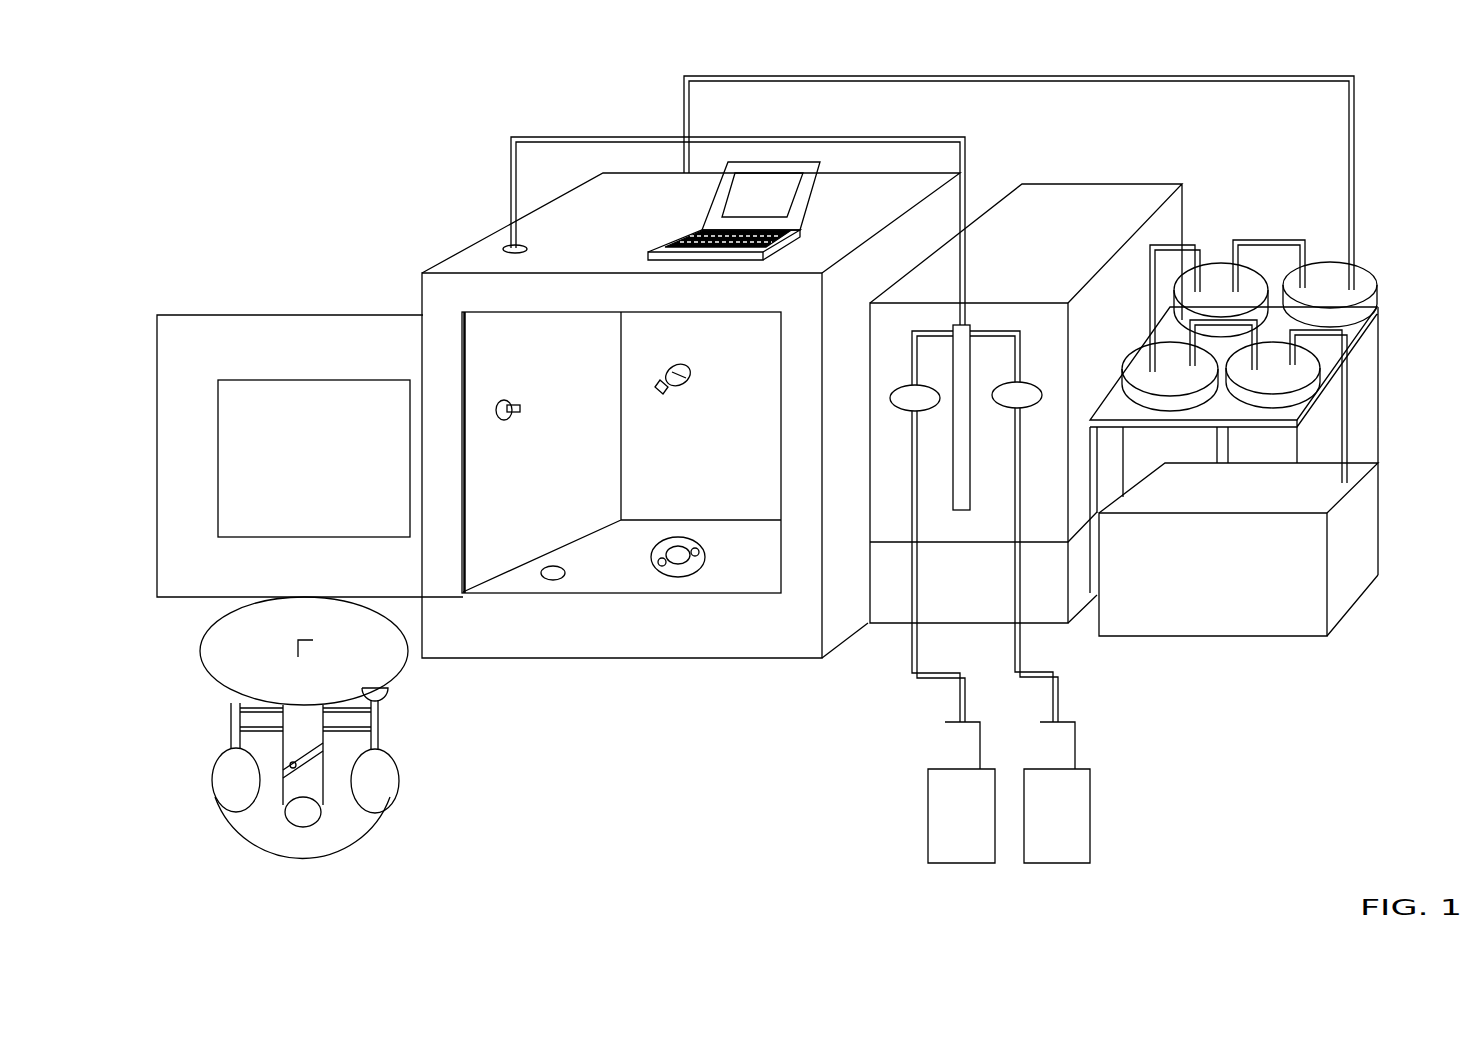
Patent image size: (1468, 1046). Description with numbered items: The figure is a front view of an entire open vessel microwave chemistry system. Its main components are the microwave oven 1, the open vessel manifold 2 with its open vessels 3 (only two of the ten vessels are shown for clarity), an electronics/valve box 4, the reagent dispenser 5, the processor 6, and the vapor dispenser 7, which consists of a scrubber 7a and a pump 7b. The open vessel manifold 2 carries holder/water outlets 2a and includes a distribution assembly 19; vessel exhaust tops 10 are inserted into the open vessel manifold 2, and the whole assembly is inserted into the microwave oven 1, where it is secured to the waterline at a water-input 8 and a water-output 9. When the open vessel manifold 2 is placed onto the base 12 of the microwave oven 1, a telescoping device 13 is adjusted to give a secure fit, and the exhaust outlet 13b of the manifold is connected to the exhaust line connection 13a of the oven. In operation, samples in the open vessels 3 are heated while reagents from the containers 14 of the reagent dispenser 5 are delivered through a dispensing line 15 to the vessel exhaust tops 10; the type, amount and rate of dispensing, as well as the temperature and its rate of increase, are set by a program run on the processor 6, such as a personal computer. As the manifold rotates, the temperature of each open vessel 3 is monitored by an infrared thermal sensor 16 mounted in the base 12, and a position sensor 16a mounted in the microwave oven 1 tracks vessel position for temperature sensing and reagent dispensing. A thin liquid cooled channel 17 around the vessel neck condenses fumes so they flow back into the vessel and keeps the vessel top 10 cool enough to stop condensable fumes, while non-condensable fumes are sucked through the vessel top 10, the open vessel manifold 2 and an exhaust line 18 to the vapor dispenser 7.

The microwave oven 1 is at (475, 258).
The open vessel manifold 2 is at (397, 675).
The holder/water outlets 2a is at (340, 733).
The open vessels 3 is at (240, 803).
The electronics/valve box 4 is at (1060, 610).
The reagent dispenser 5 is at (1045, 522).
The processor 6 is at (763, 208).
The vapor dispenser 7 is at (1307, 467).
The scrubber 7a is at (1253, 410).
The pump 7b is at (1230, 580).
The water-input 8 is at (655, 567).
The water-output 9 is at (695, 563).
The vessel exhaust tops 10 is at (386, 696).
The base 12 is at (750, 568).
The telescoping device 13 is at (288, 772).
The exhaust line connection 13a is at (655, 398).
The exhaust outlet 13b is at (296, 633).
The containers 14 is at (975, 792).
The dispensing line 15 is at (563, 138).
The infrared thermal sensor 16 is at (545, 563).
The position sensor 16a is at (510, 424).
The liquid cooled channel 17 is at (378, 735).
The exhaust line 18 is at (685, 90).
The distribution assembly 19 is at (305, 722).